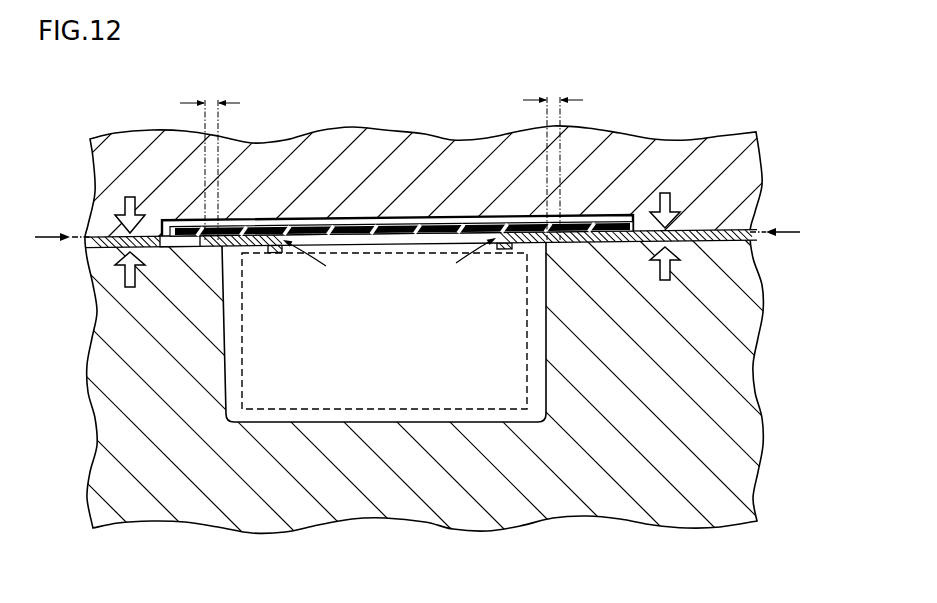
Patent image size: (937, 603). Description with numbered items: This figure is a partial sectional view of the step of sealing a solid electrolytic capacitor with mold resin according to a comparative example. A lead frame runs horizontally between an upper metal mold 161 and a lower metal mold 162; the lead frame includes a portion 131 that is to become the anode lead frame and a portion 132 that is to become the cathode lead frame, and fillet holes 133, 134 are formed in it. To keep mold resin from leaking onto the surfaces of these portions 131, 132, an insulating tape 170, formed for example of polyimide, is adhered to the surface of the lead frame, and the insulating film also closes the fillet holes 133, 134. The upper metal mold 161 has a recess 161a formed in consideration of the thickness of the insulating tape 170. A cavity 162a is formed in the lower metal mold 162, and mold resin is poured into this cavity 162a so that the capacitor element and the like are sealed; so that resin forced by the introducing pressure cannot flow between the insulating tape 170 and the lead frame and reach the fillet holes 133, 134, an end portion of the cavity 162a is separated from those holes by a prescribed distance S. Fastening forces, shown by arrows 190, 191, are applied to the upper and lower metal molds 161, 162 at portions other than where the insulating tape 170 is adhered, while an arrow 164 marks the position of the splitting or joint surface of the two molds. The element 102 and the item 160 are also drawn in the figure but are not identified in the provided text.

The electronic component 102 is at (386, 412).
The first plate 131 is at (739, 243).
The second plate 132 is at (99, 248).
The first holding member 133 is at (577, 228).
The second holding member 134 is at (188, 226).
The housing 160 is at (468, 316).
The first housing member 161 is at (637, 153).
The second housing member 162 is at (656, 508).
The inner surface of first housing member 161a is at (272, 224).
The bottom surface of recess 162a is at (492, 421).
The parting line 164 is at (38, 233).
The sheet member 170 is at (430, 228).
The pressing force 190 is at (670, 205).
The pressing force 191 is at (146, 263).
The gap S is at (381, 157).